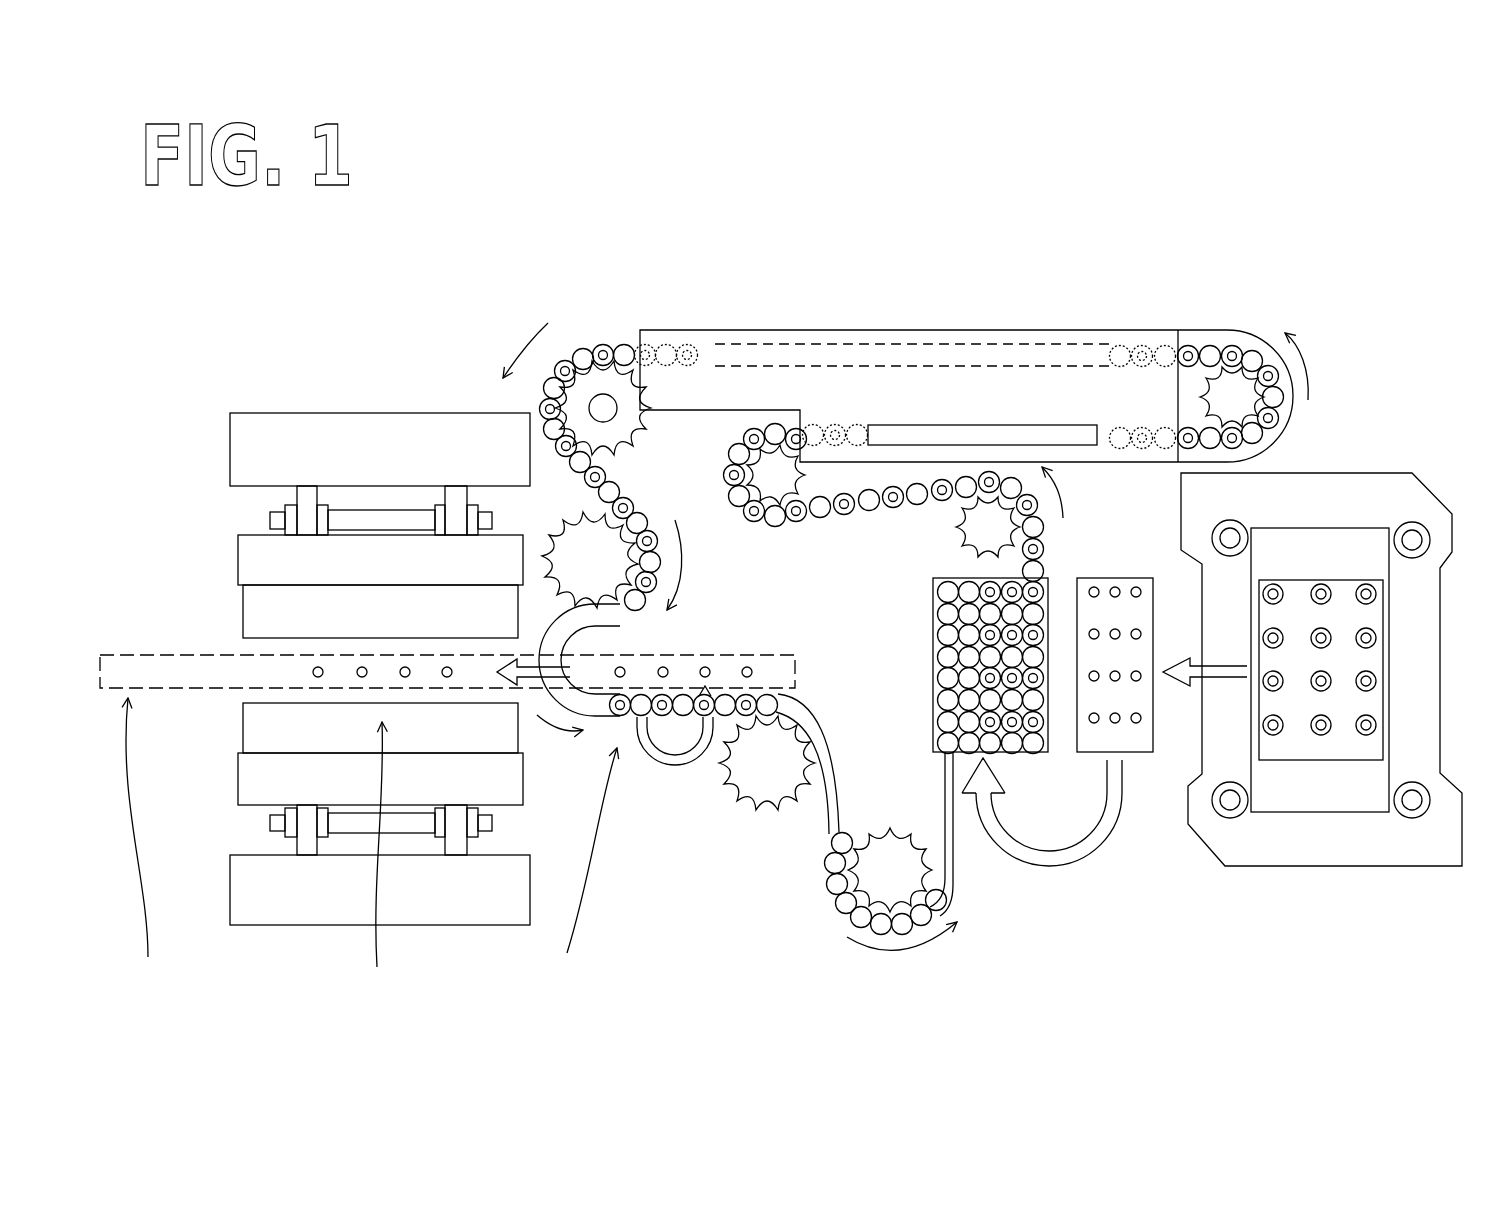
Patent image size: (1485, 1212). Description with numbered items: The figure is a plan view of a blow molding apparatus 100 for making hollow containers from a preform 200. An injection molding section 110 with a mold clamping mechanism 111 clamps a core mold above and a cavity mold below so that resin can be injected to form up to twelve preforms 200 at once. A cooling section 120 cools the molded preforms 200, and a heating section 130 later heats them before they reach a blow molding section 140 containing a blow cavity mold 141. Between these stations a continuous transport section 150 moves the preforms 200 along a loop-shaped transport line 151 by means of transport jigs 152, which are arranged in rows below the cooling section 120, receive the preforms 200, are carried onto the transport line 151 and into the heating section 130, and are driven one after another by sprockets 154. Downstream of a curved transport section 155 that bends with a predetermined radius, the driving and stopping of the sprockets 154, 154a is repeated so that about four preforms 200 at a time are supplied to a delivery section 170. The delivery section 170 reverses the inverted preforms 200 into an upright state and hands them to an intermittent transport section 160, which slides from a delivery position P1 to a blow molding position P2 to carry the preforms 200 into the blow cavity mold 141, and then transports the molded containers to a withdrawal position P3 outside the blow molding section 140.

The blow molding apparatus 100 is at (1272, 266).
The injection molding section 110 is at (1425, 470).
The mold clamping mechanism 111 is at (1322, 493).
The cooling section 120 is at (1063, 770).
The heating section 130 is at (943, 310).
The blow molding section 140 is at (326, 372).
The blow cavity mold 141 is at (273, 733).
The continuous transport section 150 is at (905, 532).
The loop-shaped transport line 151 is at (785, 530).
The transport jig 152 is at (1045, 578).
The sprocket 154 is at (977, 522).
The sprocket 154a is at (618, 550).
The curved transport section 155 is at (597, 308).
The intermittent transport section 160 is at (797, 676).
The delivery section 170 is at (683, 773).
The preform 200 is at (215, 612).
The delivery position P1 is at (577, 882).
The blow molding position P2 is at (372, 865).
The withdrawal position P3 is at (148, 847).